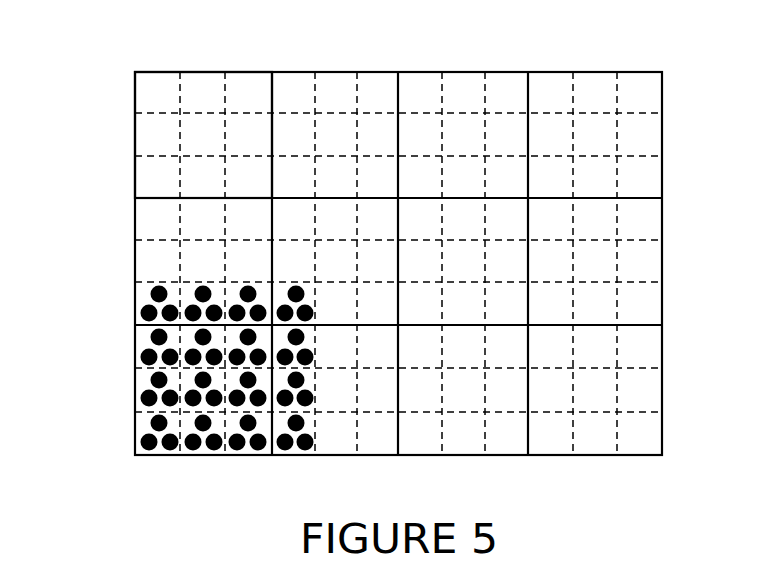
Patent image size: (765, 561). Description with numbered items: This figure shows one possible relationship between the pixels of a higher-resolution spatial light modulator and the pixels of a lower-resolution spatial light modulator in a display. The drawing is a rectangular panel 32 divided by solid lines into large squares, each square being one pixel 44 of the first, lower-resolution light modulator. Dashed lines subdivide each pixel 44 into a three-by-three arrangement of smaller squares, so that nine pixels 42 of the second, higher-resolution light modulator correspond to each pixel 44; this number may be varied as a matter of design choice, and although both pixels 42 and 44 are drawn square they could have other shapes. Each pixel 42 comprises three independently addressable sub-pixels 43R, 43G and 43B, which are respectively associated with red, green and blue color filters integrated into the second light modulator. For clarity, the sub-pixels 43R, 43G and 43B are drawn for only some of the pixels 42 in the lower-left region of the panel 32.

The display panel 32 is at (617, 72).
The pixel 42 is at (158, 93).
The pixel 44 is at (203, 72).
The sub-pixel 43R is at (152, 337).
The sub-pixel 43G is at (140, 358).
The sub-pixel 43B is at (163, 358).